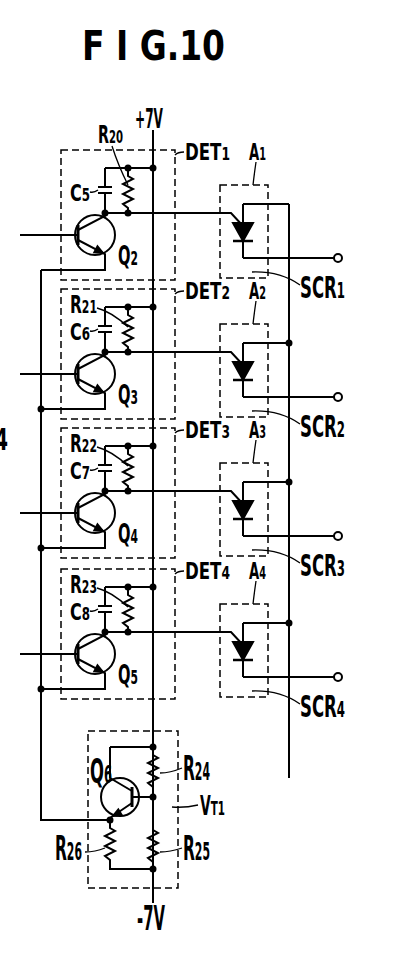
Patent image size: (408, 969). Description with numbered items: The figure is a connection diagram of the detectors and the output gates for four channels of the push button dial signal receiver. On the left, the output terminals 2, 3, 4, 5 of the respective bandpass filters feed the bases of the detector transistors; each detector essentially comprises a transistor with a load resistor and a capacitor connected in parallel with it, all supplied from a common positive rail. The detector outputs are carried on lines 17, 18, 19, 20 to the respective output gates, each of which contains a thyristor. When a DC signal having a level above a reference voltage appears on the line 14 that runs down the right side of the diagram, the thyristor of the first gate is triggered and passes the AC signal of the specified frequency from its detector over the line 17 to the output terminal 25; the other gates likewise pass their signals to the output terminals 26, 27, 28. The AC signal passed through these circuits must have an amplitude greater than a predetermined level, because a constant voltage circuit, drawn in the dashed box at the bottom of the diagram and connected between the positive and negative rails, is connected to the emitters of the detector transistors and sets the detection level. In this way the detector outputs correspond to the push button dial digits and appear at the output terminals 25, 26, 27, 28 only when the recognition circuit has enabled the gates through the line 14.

The output terminal 2 is at (20, 235).
The output terminal 3 is at (43, 353).
The output terminal 4 is at (43, 492).
The output terminal 5 is at (43, 633).
The line 17 is at (196, 213).
The line 18 is at (174, 339).
The line 19 is at (174, 478).
The line 20 is at (174, 619).
The output terminal 25 is at (342, 253).
The output terminal 26 is at (305, 377).
The output terminal 27 is at (305, 516).
The output terminal 28 is at (305, 657).
The line 14 is at (289, 773).